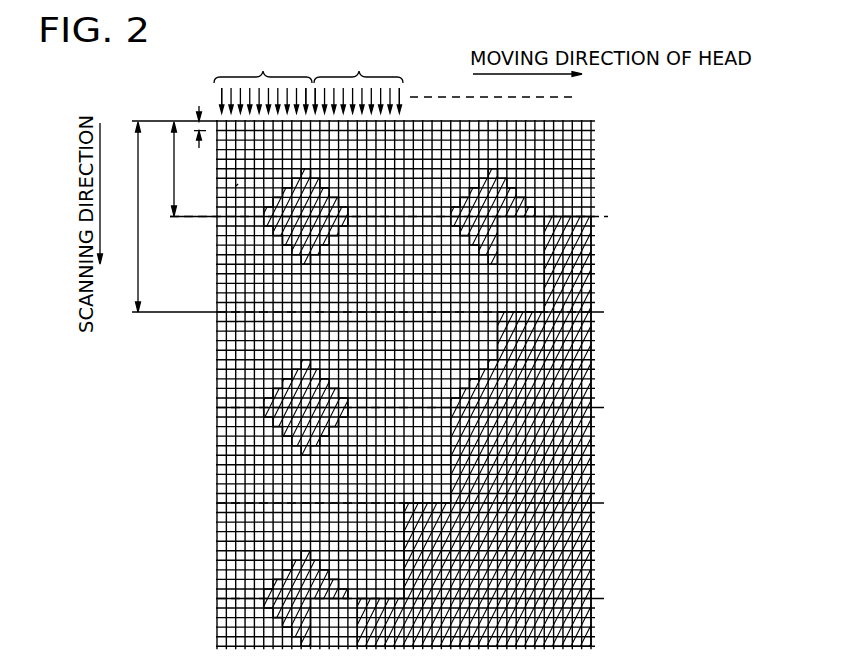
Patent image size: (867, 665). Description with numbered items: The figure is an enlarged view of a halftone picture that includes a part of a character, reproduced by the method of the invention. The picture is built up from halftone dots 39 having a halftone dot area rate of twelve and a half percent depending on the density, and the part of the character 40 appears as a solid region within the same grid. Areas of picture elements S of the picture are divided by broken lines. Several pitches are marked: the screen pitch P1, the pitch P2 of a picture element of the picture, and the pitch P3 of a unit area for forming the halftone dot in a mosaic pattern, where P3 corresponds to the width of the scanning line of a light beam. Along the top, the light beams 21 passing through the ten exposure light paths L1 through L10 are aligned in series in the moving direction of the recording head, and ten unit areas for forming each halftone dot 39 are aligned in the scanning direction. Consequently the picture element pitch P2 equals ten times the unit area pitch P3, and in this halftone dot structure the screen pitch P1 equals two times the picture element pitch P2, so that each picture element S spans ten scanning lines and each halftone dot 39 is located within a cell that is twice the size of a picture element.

The light beams 21 is at (308, 77).
The exposure light path L1 is at (221, 96).
The exposure light path L10 is at (308, 98).
The screen pitch P1 is at (137, 217).
The pitch of the picture element P2 is at (167, 169).
The pitch of a unit area P3 is at (200, 142).
The picture elements S is at (234, 188).
The halftone dots 39 is at (283, 238).
The part of the character 40 is at (557, 480).